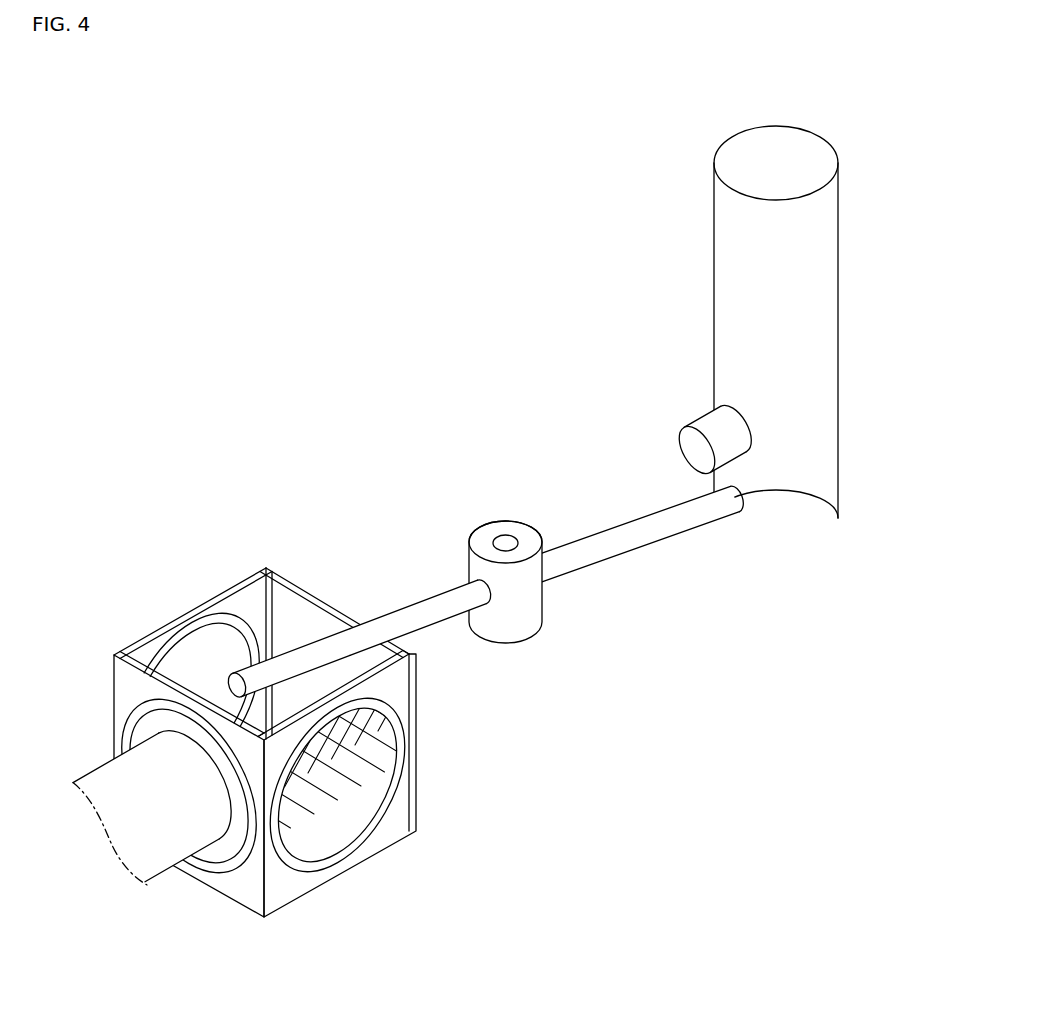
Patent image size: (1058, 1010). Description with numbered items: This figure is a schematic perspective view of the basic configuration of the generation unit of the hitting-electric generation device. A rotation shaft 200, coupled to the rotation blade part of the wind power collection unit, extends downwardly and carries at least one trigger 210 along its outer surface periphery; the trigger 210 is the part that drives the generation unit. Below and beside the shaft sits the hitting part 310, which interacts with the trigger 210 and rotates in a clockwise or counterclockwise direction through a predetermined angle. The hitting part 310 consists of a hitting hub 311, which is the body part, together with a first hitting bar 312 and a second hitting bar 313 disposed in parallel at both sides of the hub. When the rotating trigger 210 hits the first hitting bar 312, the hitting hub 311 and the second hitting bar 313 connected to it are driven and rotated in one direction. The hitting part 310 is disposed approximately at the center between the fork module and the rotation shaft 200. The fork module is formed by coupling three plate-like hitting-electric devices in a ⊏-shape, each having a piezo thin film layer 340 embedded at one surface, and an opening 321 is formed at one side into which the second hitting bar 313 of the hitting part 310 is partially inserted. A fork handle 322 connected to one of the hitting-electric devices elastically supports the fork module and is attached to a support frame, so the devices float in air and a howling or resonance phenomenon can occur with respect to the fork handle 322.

The rotation shaft 200 is at (812, 325).
The trigger 210 is at (707, 428).
The hitting part 310 is at (731, 674).
The hitting hub 311 is at (523, 622).
The first hitting bar 312 is at (620, 547).
The second hitting bar 313 is at (432, 613).
The opening 321 is at (298, 638).
The fork handle 322 is at (110, 778).
The piezo thin film layer 340 is at (327, 823).